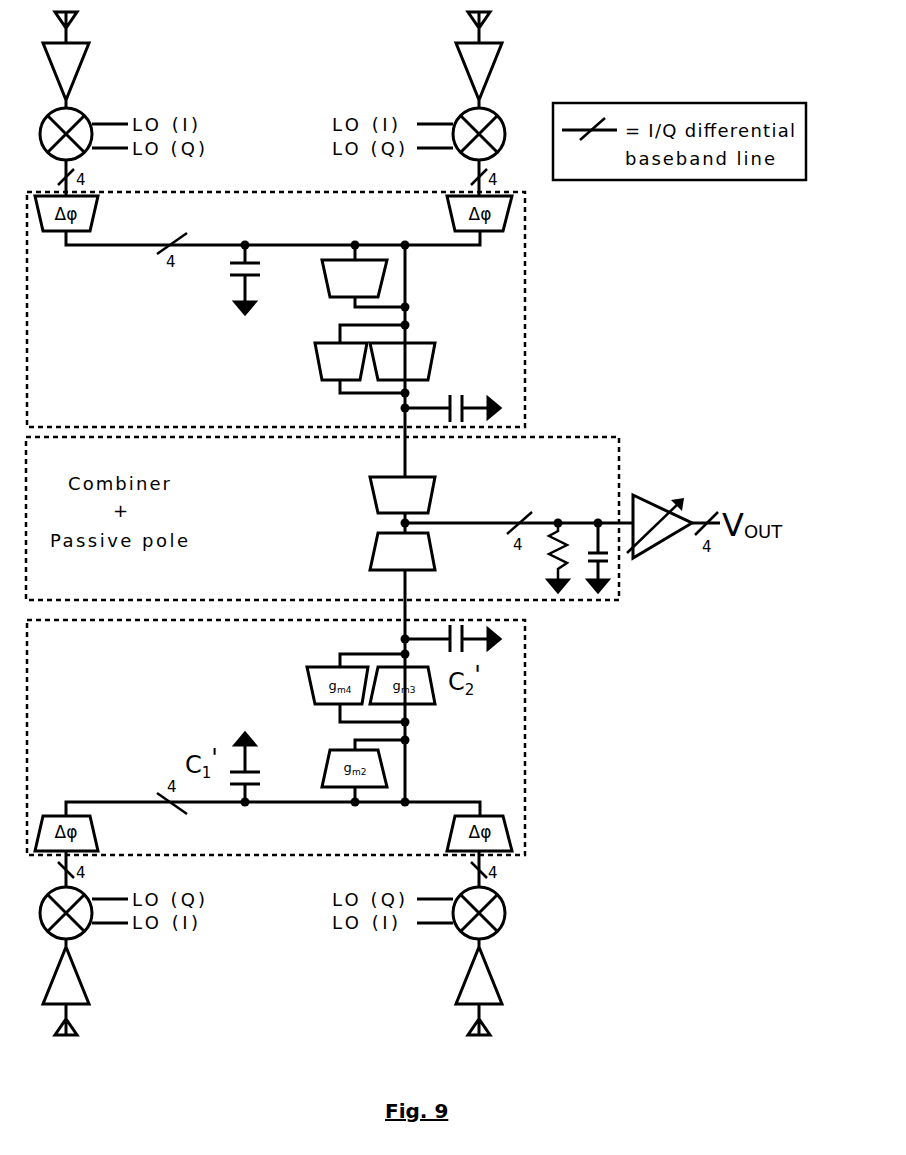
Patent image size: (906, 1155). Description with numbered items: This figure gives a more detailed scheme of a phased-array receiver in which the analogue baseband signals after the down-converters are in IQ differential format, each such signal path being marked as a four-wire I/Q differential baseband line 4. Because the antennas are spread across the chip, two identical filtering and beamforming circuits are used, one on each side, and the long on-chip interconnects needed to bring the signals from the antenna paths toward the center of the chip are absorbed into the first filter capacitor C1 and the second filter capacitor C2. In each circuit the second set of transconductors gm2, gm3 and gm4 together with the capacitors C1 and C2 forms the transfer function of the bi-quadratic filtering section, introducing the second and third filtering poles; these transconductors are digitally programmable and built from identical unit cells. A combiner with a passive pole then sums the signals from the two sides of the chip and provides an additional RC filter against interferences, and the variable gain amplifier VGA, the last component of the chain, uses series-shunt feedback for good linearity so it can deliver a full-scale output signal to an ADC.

The first filter capacitor C1 is at (222, 288).
The second filter capacitor C2 is at (474, 386).
The second-set transconductor gm2 is at (354, 278).
The second-set transconductor gm3 is at (402, 361).
The second-set transconductor gm4 is at (341, 361).
The variable gain amplifier VGA is at (673, 514).
The I/Q differential baseband line 4 is at (679, 141).